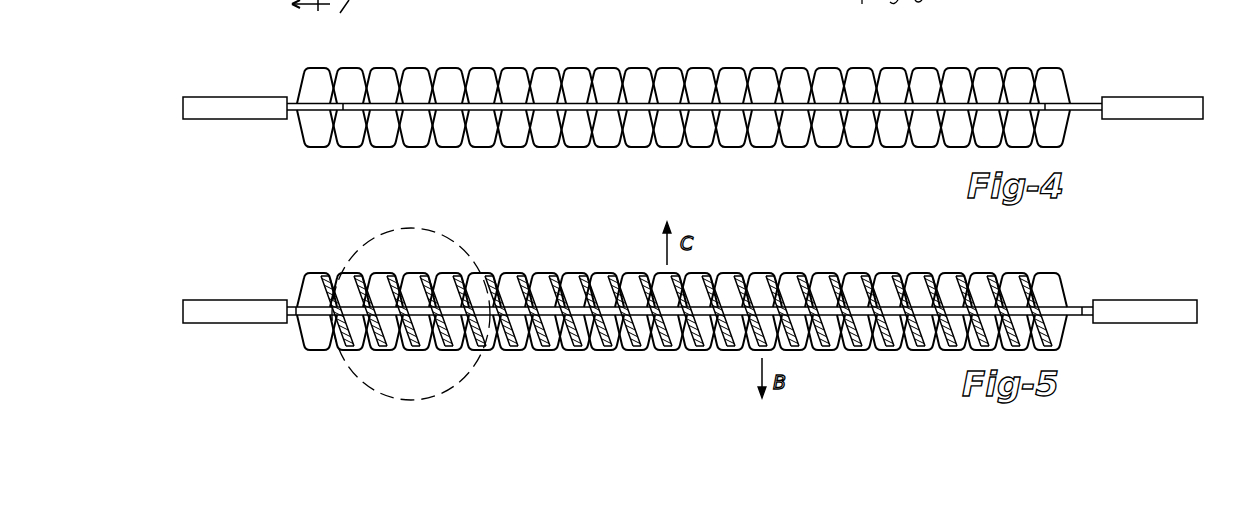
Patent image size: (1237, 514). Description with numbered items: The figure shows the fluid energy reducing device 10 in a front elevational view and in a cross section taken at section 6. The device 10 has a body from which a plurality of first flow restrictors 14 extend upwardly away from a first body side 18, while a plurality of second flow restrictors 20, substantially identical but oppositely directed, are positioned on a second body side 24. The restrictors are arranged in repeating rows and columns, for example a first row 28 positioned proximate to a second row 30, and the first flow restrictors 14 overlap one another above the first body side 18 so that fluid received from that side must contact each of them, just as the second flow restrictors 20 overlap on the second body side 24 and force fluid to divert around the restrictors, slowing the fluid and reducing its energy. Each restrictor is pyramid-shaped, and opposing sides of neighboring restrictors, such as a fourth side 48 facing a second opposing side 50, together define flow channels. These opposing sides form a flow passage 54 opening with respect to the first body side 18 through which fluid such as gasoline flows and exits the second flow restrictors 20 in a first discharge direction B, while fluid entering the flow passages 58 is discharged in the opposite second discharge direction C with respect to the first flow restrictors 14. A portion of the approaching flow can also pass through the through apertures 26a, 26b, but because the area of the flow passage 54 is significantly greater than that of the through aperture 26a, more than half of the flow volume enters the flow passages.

In FIG. 5, the detail region 6 is at (455, 240).
In FIG. 5, the fluid energy reducing device 10 is at (682, 304).
In FIG. 4, the first flow restrictors 14 is at (960, 83).
In FIG. 5, the first flow restrictors 14 is at (742, 280).
In FIG. 4, the first body side 18 is at (1087, 100).
In FIG. 5, the first body side 18 is at (1087, 303).
In FIG. 4, the second flow restrictors 20 is at (962, 130).
In FIG. 5, the second flow restrictors 20 is at (833, 347).
In FIG. 4, the second body side 24 is at (1086, 112).
In FIG. 4, the through aperture 26a is at (1055, 70).
In FIG. 5, the through aperture 26a is at (632, 272).
In FIG. 4, the through aperture 26b is at (830, 146).
In FIG. 4, the first row 28 is at (763, 72).
In FIG. 4, the second row 30 is at (800, 80).
In FIG. 5, the fourth side 48 is at (817, 293).
In FIG. 5, the second opposing side 50 is at (833, 290).
In FIG. 5, the flow passage 54 is at (853, 297).
In FIG. 5, the flow passages 58 is at (653, 322).